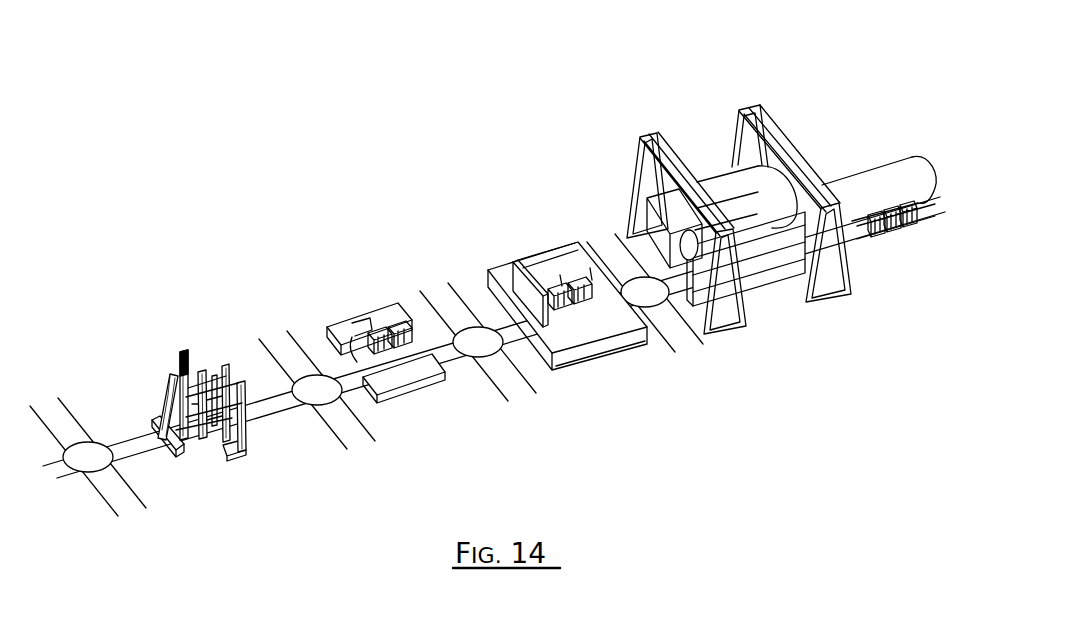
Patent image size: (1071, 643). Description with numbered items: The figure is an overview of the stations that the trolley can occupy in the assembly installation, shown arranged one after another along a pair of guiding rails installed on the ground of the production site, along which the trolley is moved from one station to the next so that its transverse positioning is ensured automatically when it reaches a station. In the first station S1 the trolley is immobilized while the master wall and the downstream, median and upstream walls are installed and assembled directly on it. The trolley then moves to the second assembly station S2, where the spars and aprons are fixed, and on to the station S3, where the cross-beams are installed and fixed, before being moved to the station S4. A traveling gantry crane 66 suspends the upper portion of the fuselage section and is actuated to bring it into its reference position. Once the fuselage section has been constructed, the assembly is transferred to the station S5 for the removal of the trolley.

The first station S1 is at (193, 323).
The second assembly station S2 is at (363, 282).
The third station S3 is at (533, 237).
The fourth station S4 is at (703, 166).
The fifth station S5 is at (870, 157).
The traveling gantry crane 66 is at (790, 117).